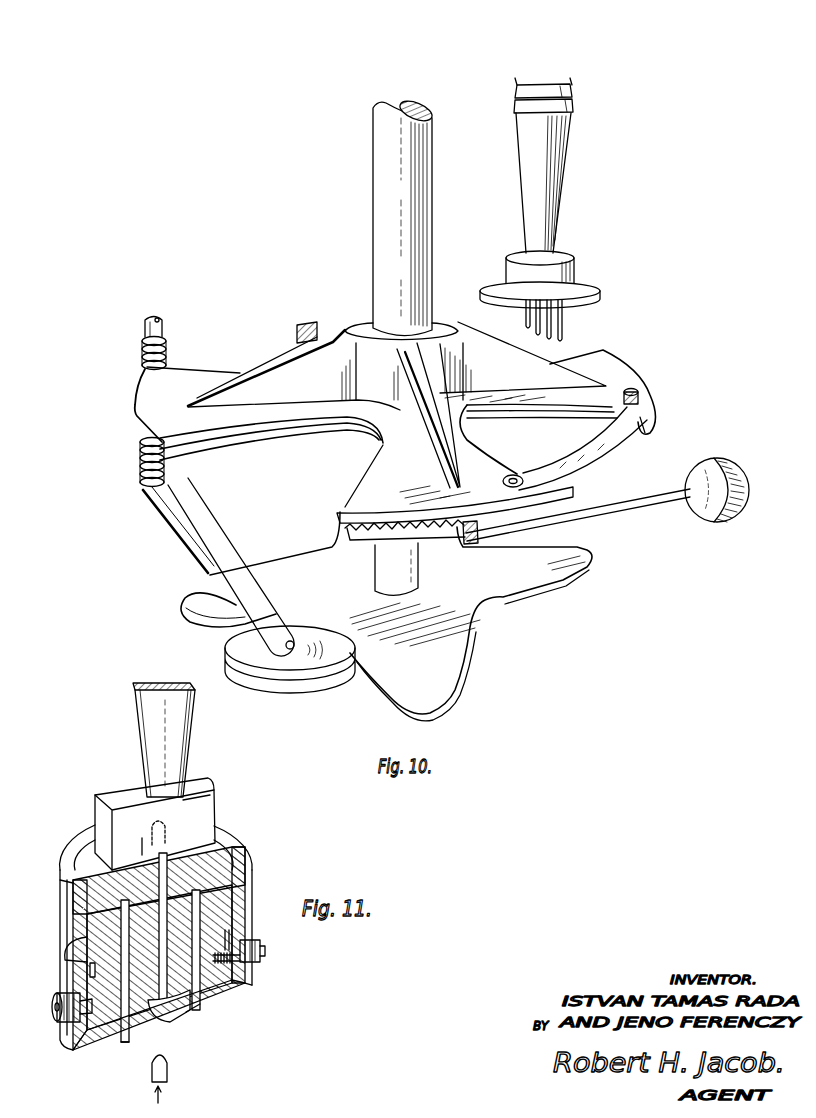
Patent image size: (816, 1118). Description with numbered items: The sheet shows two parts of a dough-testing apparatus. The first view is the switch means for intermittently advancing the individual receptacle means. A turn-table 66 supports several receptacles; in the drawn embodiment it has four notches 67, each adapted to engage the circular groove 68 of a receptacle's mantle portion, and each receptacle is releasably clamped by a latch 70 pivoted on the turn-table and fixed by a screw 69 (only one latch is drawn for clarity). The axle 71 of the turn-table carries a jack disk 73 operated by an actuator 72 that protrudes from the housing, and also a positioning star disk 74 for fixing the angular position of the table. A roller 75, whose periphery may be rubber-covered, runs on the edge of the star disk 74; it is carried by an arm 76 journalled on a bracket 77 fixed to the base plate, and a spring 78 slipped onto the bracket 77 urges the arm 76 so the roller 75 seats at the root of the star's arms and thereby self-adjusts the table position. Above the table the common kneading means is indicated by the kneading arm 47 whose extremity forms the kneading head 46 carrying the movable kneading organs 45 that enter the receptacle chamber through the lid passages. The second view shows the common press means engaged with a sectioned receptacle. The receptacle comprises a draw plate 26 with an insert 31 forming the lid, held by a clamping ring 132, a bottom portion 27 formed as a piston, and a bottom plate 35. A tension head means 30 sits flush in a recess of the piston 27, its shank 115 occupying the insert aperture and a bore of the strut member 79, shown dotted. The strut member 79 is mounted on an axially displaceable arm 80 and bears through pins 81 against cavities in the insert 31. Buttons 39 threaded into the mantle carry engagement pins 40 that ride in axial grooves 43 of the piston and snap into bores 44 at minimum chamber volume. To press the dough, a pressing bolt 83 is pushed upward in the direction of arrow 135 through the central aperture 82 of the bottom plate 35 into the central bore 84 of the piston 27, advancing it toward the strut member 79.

In FIG. 10, the axle 71 is at (410, 174).
In FIG. 10, the kneading arm 47 is at (547, 146).
In FIG. 10, the kneading head 46 is at (565, 275).
In FIG. 10, the movable kneading organs 45 is at (561, 329).
In FIG. 10, the turn-table 66 is at (603, 372).
In FIG. 10, the screw 69 is at (640, 392).
In FIG. 10, the latch 70 is at (613, 450).
In FIG. 10, the actuator 72 is at (706, 497).
In FIG. 10, the notches 67 is at (358, 482).
In FIG. 10, the jack disk 73 is at (368, 534).
In FIG. 10, the arm 76 is at (206, 597).
In FIG. 10, the roller 75 is at (238, 653).
In FIG. 10, the positioning star disk 74 is at (455, 640).
In FIG. 10, the bracket 77 is at (163, 328).
In FIG. 10, the spring 78 is at (168, 354).
In FIG. 11, the axially displaceable arm 80 is at (175, 724).
In FIG. 11, the strut member 79 is at (195, 783).
In FIG. 11, the shank 115 is at (163, 862).
In FIG. 11, the insert 31 is at (136, 839).
In FIG. 11, the pins 81 is at (205, 834).
In FIG. 11, the draw plate 26 is at (87, 866).
In FIG. 11, the clamping ring 132 is at (59, 880).
In FIG. 11, the bottom portion 27 is at (240, 880).
In FIG. 11, the tension head means 30 is at (86, 920).
In FIG. 11, the bottom plate 35 is at (72, 1046).
In FIG. 11, the circular groove 68 is at (68, 946).
In FIG. 11, the buttons 39 is at (60, 995).
In FIG. 11, the engagement pin 40 is at (248, 963).
In FIG. 11, the axial groove 43 is at (238, 940).
In FIG. 11, the bore 44 is at (242, 988).
In FIG. 11, the central aperture 82 is at (192, 1012).
In FIG. 11, the central bore 84 is at (140, 1040).
In FIG. 11, the pressing bolt 83 is at (168, 1068).
In FIG. 11, the arrow 135 is at (164, 1099).